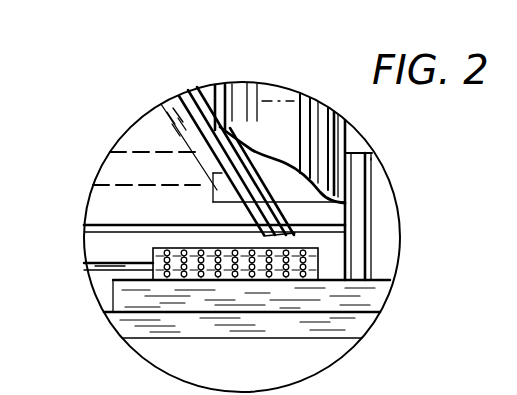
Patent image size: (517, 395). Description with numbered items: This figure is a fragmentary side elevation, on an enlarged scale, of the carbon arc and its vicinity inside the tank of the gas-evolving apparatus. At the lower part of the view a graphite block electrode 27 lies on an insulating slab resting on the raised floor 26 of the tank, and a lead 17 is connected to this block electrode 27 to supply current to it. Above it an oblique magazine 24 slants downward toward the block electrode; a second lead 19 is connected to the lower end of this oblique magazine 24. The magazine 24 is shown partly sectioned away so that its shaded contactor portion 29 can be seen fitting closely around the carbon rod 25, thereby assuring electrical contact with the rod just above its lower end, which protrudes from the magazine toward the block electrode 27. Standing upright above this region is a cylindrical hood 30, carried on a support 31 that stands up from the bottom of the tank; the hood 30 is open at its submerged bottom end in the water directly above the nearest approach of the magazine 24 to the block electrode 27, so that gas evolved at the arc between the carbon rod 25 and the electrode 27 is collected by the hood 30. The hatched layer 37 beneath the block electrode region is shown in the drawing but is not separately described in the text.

The lead 17 is at (94, 271).
The lead 19 is at (111, 225).
The oblique magazine 24 is at (170, 112).
The carbon rod 25 is at (340, 250).
The raised floor 26 is at (336, 326).
The graphite block electrode 27 is at (195, 272).
The contactor portion 29 is at (341, 187).
The cylindrical hood 30 is at (282, 128).
The support 31 is at (352, 161).
The hatched layer 37 is at (370, 297).